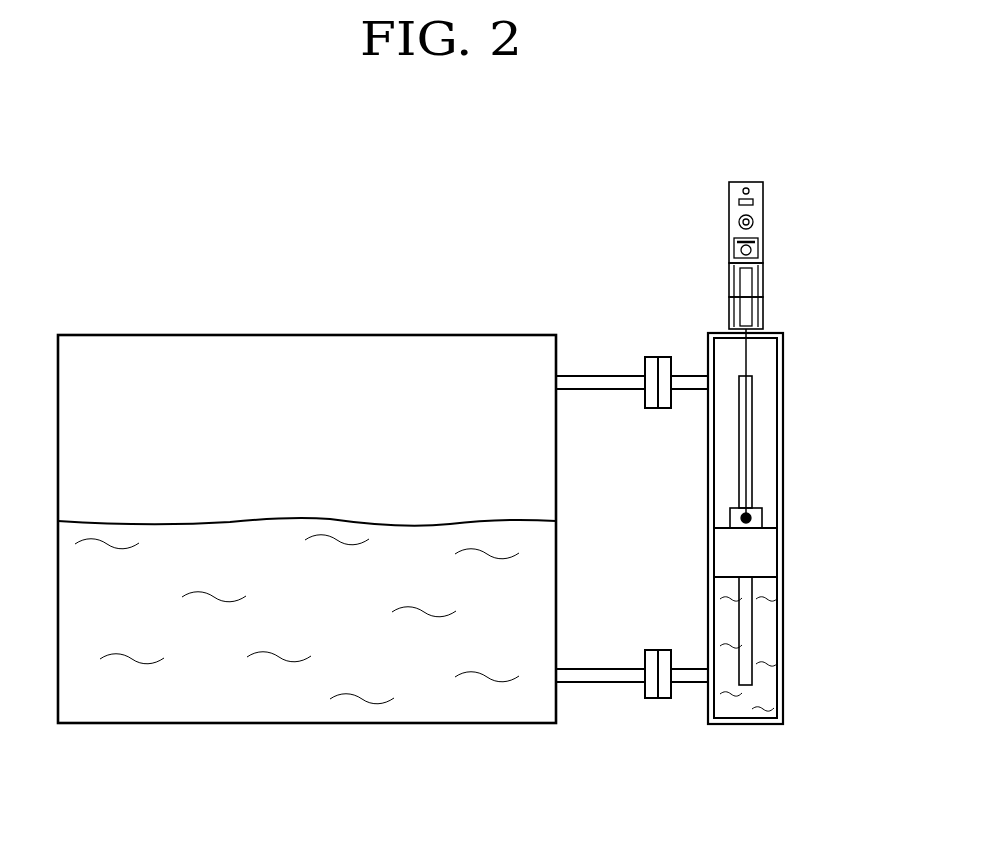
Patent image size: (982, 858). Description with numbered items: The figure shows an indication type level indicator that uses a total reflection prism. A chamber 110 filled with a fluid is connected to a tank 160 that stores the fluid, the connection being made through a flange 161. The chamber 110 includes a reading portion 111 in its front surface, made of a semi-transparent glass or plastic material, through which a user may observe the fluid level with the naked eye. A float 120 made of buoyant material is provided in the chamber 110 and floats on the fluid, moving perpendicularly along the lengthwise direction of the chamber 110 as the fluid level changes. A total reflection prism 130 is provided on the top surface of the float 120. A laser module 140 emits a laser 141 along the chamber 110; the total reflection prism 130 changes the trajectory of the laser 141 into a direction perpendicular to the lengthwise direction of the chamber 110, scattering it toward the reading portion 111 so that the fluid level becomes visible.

The chamber 110 is at (766, 725).
The reading portion 111 is at (753, 646).
The float 120 is at (770, 557).
The total reflection prism 130 is at (763, 515).
The laser module 140 is at (774, 236).
The laser 141 is at (748, 357).
The tank 160 is at (419, 725).
The flange 161 is at (652, 699).